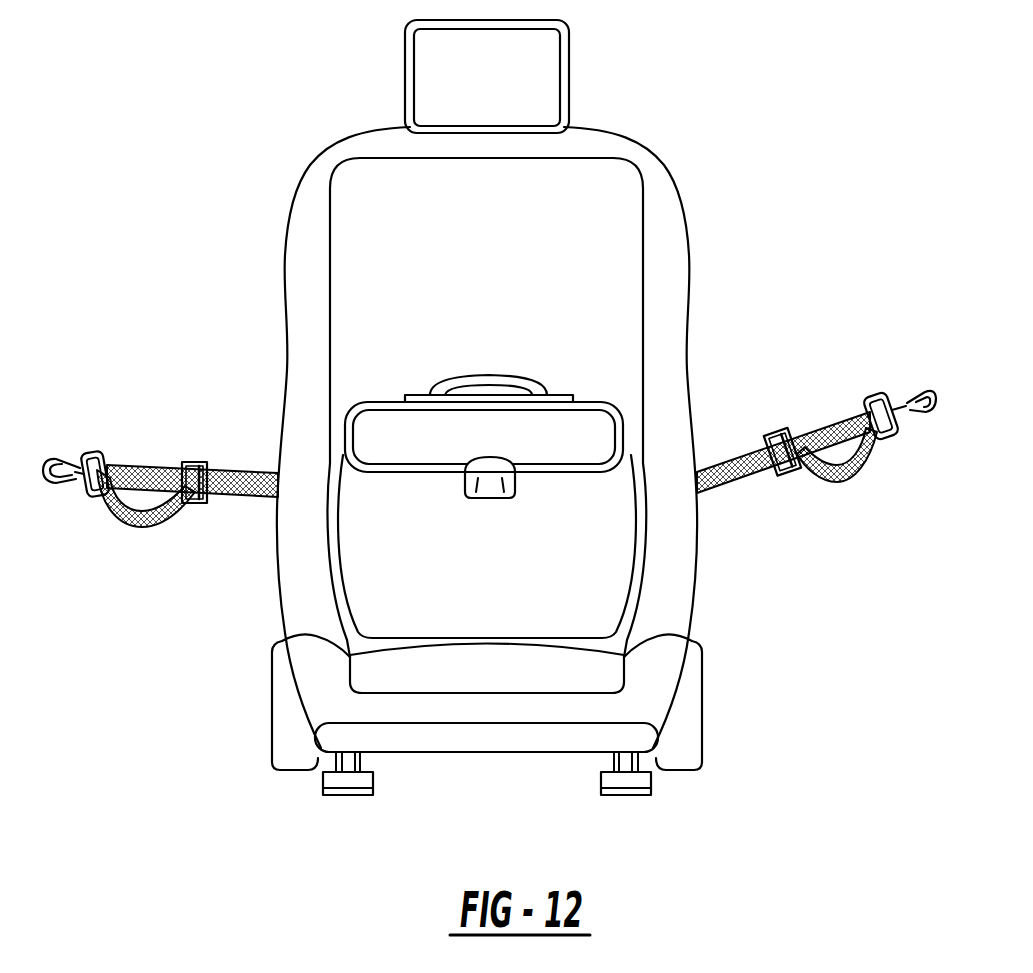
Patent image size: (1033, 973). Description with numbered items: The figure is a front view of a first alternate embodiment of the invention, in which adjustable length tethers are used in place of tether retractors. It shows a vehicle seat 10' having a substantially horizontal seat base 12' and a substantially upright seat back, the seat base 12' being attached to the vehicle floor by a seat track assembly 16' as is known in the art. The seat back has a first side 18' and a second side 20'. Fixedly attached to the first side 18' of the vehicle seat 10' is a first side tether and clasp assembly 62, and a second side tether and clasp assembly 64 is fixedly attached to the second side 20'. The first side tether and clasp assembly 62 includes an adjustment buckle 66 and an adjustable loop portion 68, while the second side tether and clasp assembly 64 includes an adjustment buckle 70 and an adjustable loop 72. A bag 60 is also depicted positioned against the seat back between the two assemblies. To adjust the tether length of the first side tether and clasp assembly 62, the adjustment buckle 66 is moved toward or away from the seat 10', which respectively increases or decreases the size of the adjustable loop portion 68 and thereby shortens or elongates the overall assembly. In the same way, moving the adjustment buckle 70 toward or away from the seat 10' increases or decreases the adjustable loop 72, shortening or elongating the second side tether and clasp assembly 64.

The vehicle seat 10' is at (500, 435).
The seat base 12' is at (547, 702).
The seat track assembly 16' is at (539, 801).
The first side 18' is at (412, 437).
The second side 20' is at (677, 437).
The bag 60 is at (575, 423).
The first side tether and clasp assembly 62 is at (243, 485).
The second side tether and clasp assembly 64 is at (733, 468).
The adjustment buckle 66 is at (197, 467).
The adjustable loop portion 68 is at (115, 502).
The adjustment buckle 70 is at (780, 443).
The adjustable loop 72 is at (853, 473).